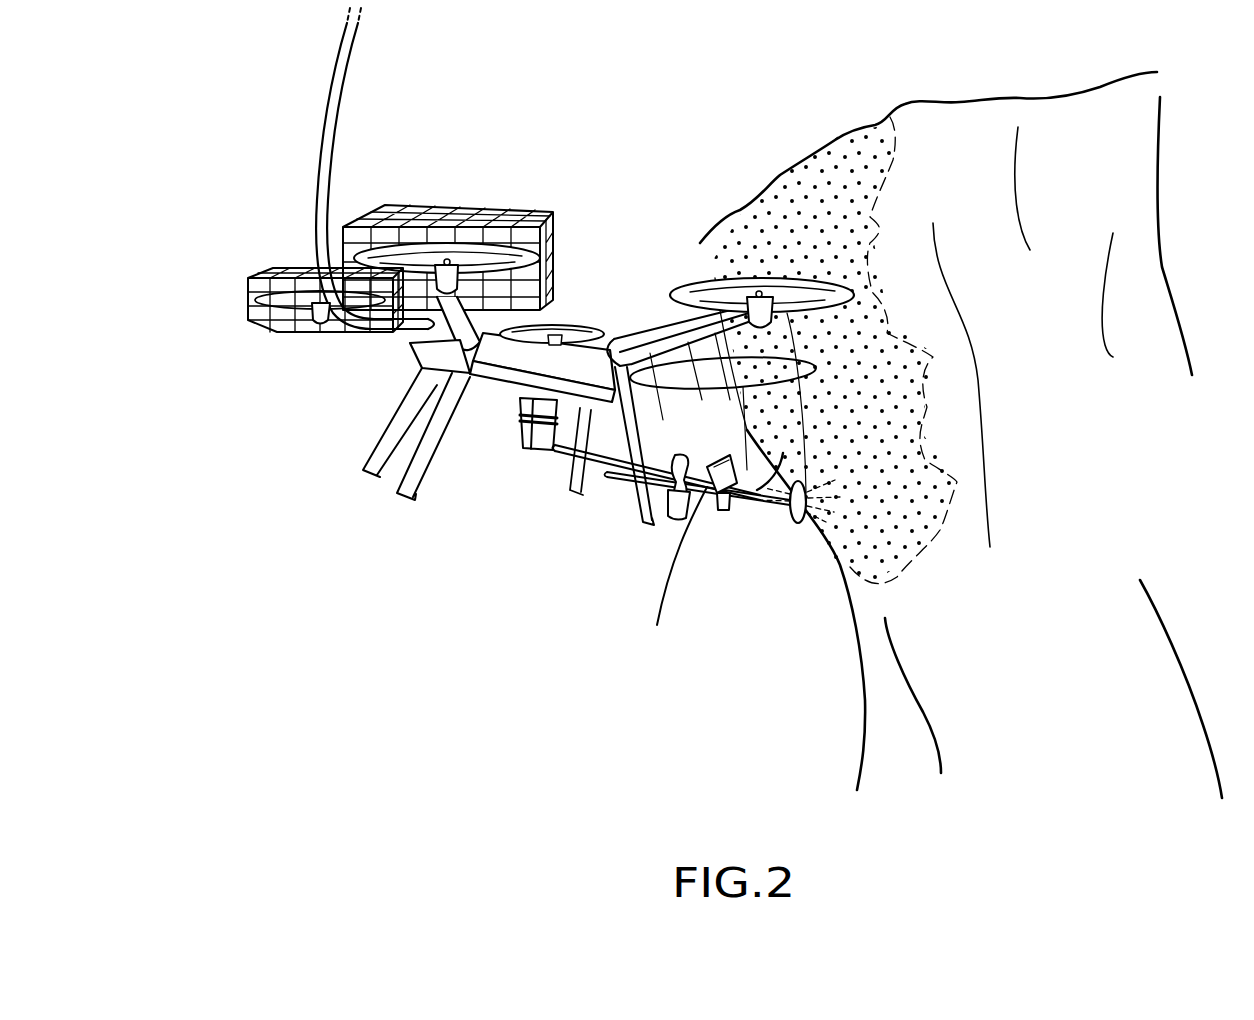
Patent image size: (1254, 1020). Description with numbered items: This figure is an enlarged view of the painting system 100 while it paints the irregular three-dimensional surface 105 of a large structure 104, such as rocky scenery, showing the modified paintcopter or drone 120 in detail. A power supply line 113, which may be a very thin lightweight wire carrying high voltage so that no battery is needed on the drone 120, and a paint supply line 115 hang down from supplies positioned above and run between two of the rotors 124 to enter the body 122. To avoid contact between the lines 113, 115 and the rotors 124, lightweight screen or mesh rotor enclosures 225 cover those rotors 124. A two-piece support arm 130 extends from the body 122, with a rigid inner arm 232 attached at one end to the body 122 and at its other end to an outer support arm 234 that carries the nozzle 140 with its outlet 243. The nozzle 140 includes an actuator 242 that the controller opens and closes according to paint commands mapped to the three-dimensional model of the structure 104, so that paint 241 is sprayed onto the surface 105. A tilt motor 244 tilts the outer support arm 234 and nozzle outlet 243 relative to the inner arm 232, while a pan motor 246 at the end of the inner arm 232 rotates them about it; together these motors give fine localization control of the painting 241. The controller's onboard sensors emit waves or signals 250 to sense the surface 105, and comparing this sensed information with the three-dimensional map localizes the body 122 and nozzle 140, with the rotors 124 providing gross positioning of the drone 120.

The painting system 100 is at (210, 572).
The structure 104 is at (845, 750).
The 3D surface 105 is at (724, 264).
The power supply line 113 is at (406, 168).
The paint supply line 115 is at (335, 180).
The drone 120 is at (345, 388).
The body 122 is at (487, 397).
The rotors 124 is at (498, 248).
The rotor enclosures 225 is at (292, 265).
The support arm 130 is at (636, 469).
The inner arm 232 is at (590, 478).
The outer support arm 234 is at (671, 566).
The actuator 242 is at (718, 523).
The tilt motor 244 is at (669, 525).
The pan motor 246 is at (690, 447).
The nozzle outlet 243 is at (781, 458).
The paint 241 is at (796, 524).
The nozzle 140 is at (752, 522).
The waves/signals 250 is at (812, 363).